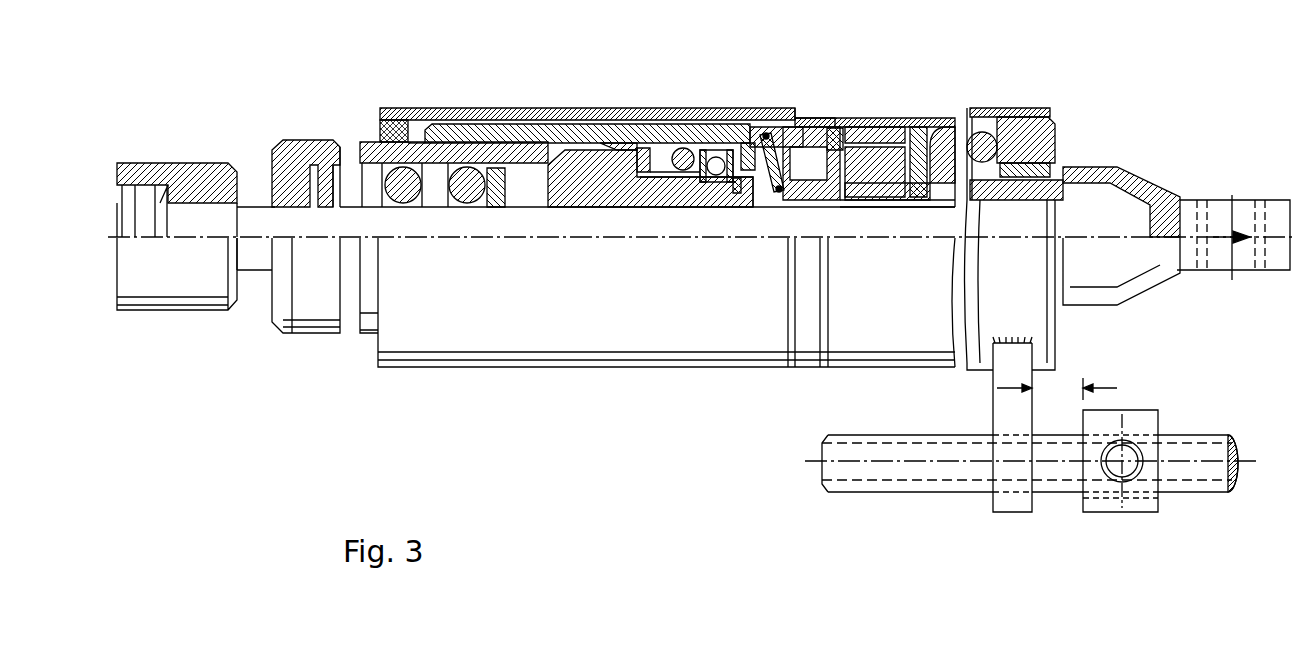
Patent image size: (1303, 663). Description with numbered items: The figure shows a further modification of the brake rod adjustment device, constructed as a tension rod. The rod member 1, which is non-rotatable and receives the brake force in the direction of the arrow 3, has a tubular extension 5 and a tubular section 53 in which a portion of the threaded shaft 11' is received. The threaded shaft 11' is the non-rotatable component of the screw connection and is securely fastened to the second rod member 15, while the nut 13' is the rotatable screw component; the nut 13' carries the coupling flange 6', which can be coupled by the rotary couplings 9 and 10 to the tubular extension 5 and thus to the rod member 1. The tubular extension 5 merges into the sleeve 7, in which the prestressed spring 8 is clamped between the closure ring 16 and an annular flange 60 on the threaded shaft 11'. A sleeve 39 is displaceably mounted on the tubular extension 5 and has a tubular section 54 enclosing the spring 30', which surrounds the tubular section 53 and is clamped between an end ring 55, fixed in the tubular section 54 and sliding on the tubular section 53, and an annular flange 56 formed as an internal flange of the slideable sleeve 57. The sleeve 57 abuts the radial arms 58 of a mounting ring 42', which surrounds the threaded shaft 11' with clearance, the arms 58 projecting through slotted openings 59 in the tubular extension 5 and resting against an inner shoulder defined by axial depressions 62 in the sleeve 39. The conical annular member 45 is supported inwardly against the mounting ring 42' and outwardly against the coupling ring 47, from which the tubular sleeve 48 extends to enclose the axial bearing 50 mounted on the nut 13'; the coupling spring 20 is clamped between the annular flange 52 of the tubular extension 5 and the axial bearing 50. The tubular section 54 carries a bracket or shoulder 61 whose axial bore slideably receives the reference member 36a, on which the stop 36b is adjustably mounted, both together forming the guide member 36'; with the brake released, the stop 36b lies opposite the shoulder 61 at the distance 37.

The rod member 1 is at (1187, 198).
The arrow 3 is at (1223, 200).
The tubular extension 5 is at (677, 148).
The coupling flange 6' is at (650, 215).
The sleeve 7 is at (318, 150).
The prestressed spring 8 is at (383, 152).
The rotary coupling 9 is at (600, 124).
The rotary coupling 10 is at (490, 121).
The threaded shaft 11' is at (647, 244).
The nut 13' is at (696, 229).
The rod member 15 is at (200, 200).
The closure ring 16 is at (275, 175).
The coupling spring 20 is at (645, 148).
The spring 30' is at (999, 98).
The reference member 36a is at (932, 477).
The stop 36b is at (1125, 505).
The guide or reference member 36' is at (1097, 549).
The distance 37 is at (1057, 392).
The sleeve 39 is at (617, 108).
The mounting ring 42' is at (831, 211).
The conical annular member 45 is at (776, 193).
The coupling ring 47 is at (752, 143).
The tubular sleeve 48 is at (722, 150).
The axial bearing 50 is at (714, 178).
The annular flange 52 is at (617, 147).
The tubular section 53 is at (1020, 203).
The tubular section 54 is at (1015, 112).
The end ring 55 is at (1053, 140).
The annular flange 56 is at (925, 190).
The slideable sleeve 57 is at (903, 127).
The radial arms 58 is at (840, 128).
The slotted openings 59 is at (826, 140).
The annular flange 60 is at (497, 206).
The bracket or shoulder 61 is at (1012, 507).
The depressions 62 is at (800, 117).